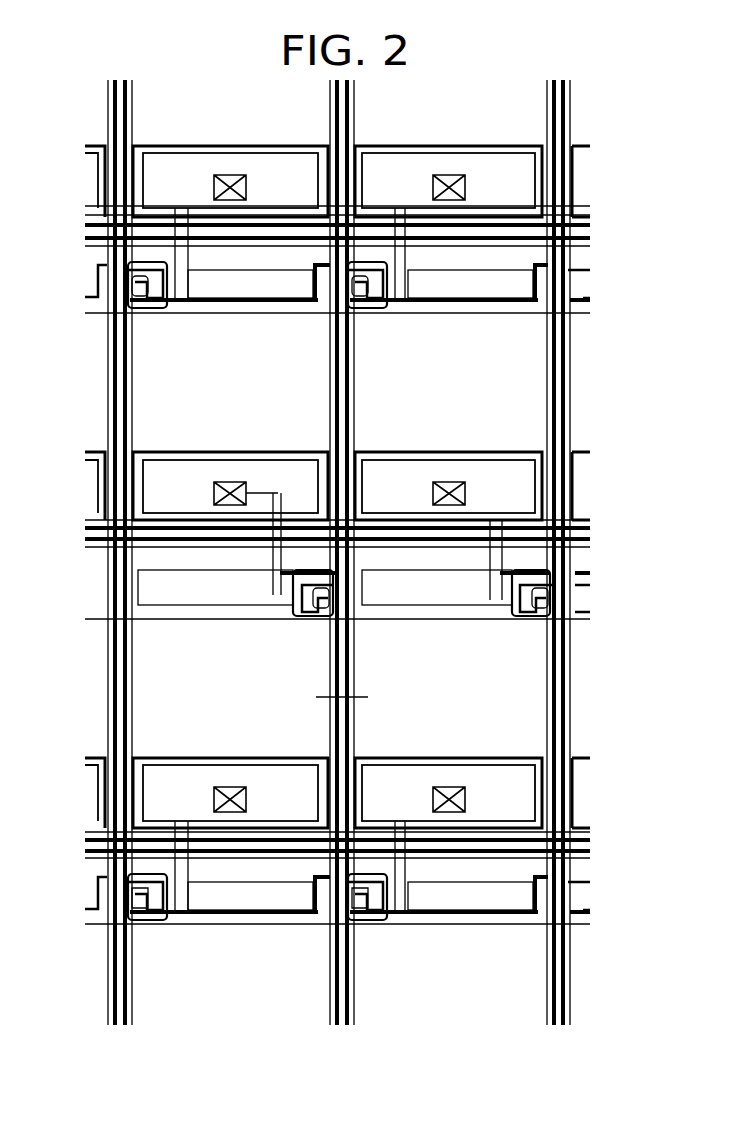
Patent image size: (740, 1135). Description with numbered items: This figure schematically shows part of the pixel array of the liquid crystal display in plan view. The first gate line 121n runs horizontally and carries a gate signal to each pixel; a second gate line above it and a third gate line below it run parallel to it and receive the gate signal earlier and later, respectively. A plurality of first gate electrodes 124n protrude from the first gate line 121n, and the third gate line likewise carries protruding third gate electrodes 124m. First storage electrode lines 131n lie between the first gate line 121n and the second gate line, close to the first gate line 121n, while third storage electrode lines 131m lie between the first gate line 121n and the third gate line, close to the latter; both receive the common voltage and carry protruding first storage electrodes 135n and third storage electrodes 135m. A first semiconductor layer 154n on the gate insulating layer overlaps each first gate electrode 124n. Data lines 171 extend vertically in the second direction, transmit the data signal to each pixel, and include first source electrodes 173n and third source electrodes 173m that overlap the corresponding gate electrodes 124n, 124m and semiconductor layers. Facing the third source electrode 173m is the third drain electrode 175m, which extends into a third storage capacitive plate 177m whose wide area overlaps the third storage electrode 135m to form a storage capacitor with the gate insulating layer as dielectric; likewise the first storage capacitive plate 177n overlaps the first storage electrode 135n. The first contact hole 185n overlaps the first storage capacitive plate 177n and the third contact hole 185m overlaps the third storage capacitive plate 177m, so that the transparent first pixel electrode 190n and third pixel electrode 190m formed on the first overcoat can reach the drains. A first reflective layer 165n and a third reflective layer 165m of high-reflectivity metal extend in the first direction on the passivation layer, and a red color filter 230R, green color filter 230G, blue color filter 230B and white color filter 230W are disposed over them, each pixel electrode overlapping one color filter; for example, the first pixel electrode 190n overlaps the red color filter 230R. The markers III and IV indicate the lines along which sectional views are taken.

The data line 171 is at (113, 391).
The first storage electrode line 131n is at (107, 503).
The third storage electrode line 131m is at (107, 803).
The red color filter 230R is at (247, 90).
The green color filter 230G is at (468, 90).
The blue color filter 230B is at (247, 396).
The white color filter 230W is at (473, 396).
The first storage electrode 135n is at (177, 455).
The third storage electrode 135m is at (177, 758).
The first storage capacitive plate 177n is at (273, 462).
The third storage capacitive plate 177m is at (273, 765).
The first contact hole 185n is at (213, 493).
The third contact hole 185m is at (232, 787).
The first reflective layer 165n is at (295, 506).
The third reflective layer 165m is at (306, 153).
The third drain electrode 175m is at (190, 863).
The first gate electrode 124n is at (280, 577).
The third gate electrode 124m is at (167, 889).
The first gate line 121n is at (177, 606).
The first source electrode 173n is at (276, 557).
The third source electrode 173m is at (112, 865).
The first semiconductor layer 154n is at (300, 614).
The first pixel electrode 190n is at (120, 697).
The third pixel electrode 190m is at (120, 966).
The section line III is at (232, 482).
The section line IV is at (316, 692).